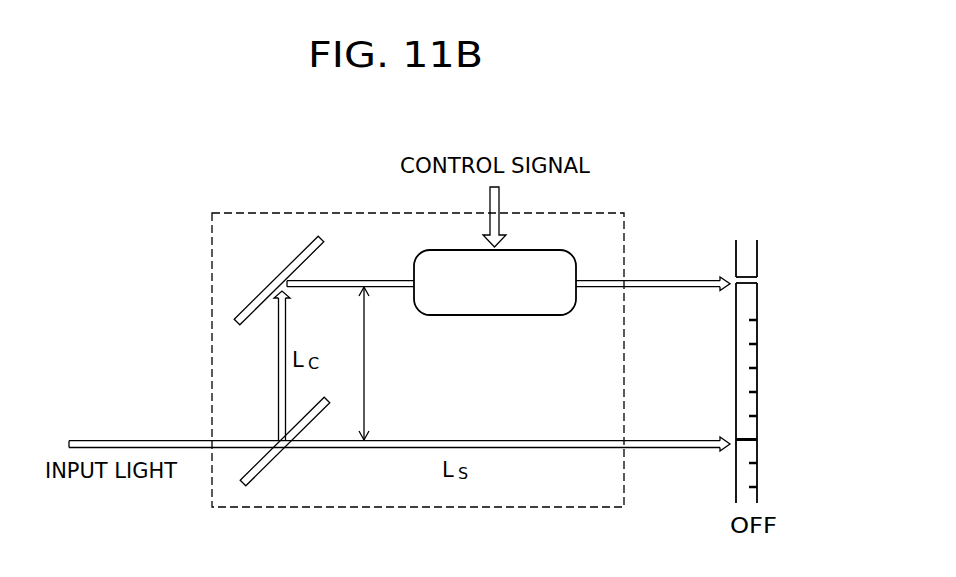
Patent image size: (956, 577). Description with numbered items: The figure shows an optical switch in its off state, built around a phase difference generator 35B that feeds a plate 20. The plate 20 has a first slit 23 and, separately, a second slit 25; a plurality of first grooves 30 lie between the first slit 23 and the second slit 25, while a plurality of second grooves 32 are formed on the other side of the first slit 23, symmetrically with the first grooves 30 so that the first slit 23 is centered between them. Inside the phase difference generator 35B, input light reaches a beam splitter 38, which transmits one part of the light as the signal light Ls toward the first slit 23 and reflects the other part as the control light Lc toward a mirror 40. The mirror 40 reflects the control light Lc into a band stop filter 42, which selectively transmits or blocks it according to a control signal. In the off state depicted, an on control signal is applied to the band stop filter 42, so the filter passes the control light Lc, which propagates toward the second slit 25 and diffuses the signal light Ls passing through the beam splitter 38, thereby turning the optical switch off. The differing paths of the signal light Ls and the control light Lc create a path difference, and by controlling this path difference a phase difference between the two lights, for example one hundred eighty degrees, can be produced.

The plate 20 is at (747, 248).
The first slit 23 is at (757, 440).
The second slit 25 is at (760, 282).
The first grooves 30 is at (757, 368).
The second grooves 32 is at (757, 487).
The phase difference generator 35B is at (212, 362).
The beam splitter 38 is at (269, 468).
The mirror 40 is at (297, 255).
The band stop filter 42 is at (496, 316).